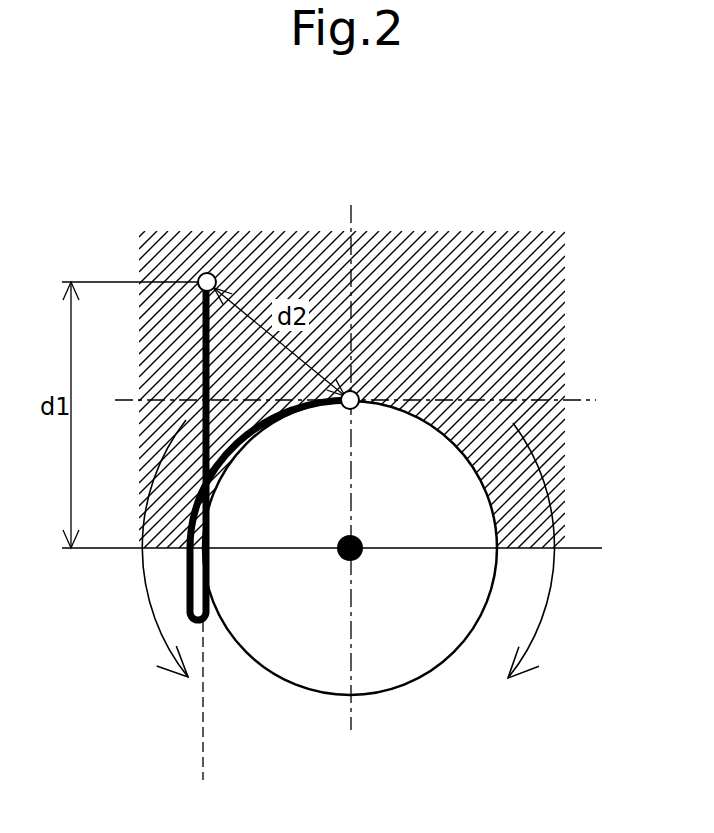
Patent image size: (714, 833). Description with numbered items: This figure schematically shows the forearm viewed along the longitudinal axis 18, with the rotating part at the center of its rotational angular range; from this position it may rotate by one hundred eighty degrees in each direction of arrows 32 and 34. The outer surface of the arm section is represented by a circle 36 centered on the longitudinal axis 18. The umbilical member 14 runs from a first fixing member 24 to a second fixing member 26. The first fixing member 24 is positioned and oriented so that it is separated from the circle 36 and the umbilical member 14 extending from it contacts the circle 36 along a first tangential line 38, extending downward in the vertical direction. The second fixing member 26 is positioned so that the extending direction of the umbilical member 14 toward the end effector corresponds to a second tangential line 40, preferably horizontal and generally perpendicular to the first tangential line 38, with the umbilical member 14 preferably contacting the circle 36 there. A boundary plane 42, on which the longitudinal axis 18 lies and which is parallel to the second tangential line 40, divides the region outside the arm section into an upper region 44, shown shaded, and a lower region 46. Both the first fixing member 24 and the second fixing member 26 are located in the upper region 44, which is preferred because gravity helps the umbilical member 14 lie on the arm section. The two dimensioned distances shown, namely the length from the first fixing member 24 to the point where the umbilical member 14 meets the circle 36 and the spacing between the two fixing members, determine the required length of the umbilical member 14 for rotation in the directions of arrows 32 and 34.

The umbilical member 14 is at (187, 594).
The longitudinal axis 18 is at (352, 556).
The first fixing member 24 is at (207, 272).
The second fixing member 26 is at (355, 394).
The arrow 32 is at (160, 620).
The arrow 34 is at (543, 617).
The circle 36 is at (300, 694).
The first tangential line 38 is at (203, 755).
The second tangential line 40 is at (588, 400).
The boundary plane 42 is at (593, 546).
The upper region 44 is at (541, 300).
The lower region 46 is at (433, 752).